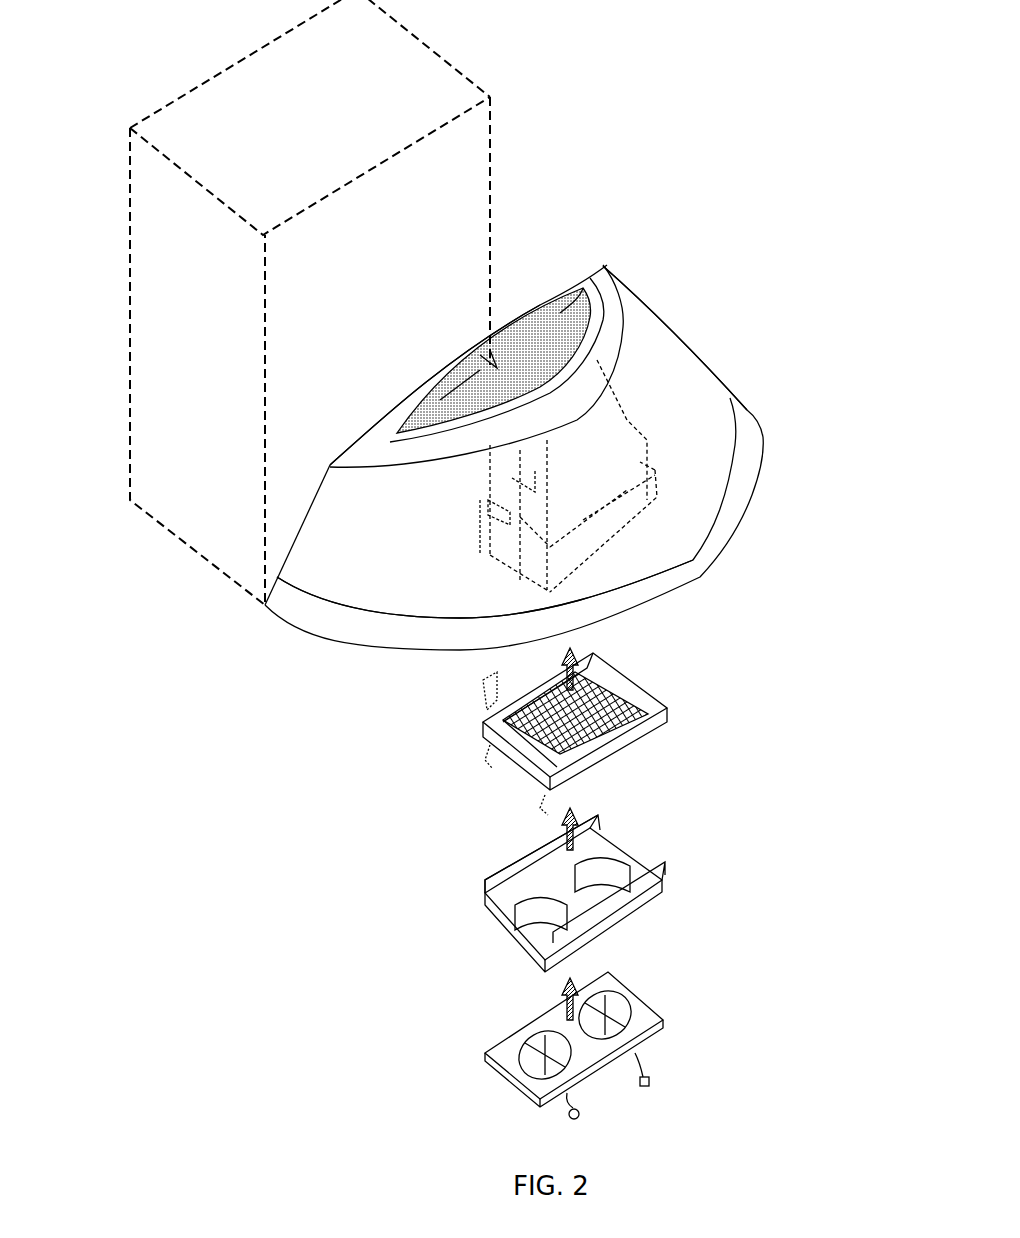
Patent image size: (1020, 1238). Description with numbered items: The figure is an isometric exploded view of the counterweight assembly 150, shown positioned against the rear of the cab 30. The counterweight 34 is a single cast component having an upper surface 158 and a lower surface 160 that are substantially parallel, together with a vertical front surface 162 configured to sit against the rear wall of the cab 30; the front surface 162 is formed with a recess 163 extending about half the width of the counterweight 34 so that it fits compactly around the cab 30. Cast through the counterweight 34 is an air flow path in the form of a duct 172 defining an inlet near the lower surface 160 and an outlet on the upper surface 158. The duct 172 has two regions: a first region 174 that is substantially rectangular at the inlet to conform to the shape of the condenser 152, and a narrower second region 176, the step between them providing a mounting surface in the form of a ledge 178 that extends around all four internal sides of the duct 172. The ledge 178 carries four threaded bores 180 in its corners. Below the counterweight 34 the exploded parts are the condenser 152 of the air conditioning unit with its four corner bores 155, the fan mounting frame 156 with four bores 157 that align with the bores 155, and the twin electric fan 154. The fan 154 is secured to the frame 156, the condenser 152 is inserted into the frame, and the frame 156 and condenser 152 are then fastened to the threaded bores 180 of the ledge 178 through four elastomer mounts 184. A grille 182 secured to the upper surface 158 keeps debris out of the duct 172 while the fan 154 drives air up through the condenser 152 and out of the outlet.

The cab 30 is at (148, 392).
The counterweight 34 is at (687, 362).
The counterweight assembly 150 is at (785, 270).
The condenser 152 is at (625, 745).
The twin electric fan 154 is at (655, 1037).
The bores 155 is at (557, 780).
The fan mounting frame 156 is at (627, 905).
The bores 157 is at (487, 893).
The upper surface 158 is at (607, 293).
The lower surface 160 is at (613, 613).
The front surface 162 is at (463, 382).
The recess 163 is at (405, 372).
The duct 172 is at (632, 423).
The first region 174 is at (488, 535).
The second region 176 is at (512, 478).
The ledge 178 is at (635, 495).
The threaded bores 180 is at (550, 547).
The grille 182 is at (560, 313).
The elastomer mounts 184 is at (483, 692).